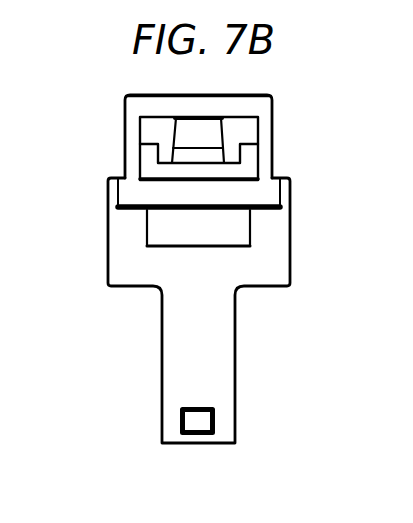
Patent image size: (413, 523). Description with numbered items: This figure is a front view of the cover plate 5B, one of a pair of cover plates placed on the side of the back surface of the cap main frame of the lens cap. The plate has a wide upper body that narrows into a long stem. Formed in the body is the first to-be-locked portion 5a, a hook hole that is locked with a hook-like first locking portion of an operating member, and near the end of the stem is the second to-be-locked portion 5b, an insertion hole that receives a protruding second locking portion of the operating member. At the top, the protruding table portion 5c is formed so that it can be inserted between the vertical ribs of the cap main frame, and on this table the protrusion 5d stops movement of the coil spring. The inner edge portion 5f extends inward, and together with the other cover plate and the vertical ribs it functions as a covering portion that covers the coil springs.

The cover plate 5B is at (291, 233).
The inner edge portion 5f is at (125, 111).
The protruding table portion 5c is at (247, 153).
The protrusion 5d is at (213, 135).
The first to-be-locked portion 5a is at (213, 232).
The second to-be-locked portion 5b is at (202, 422).